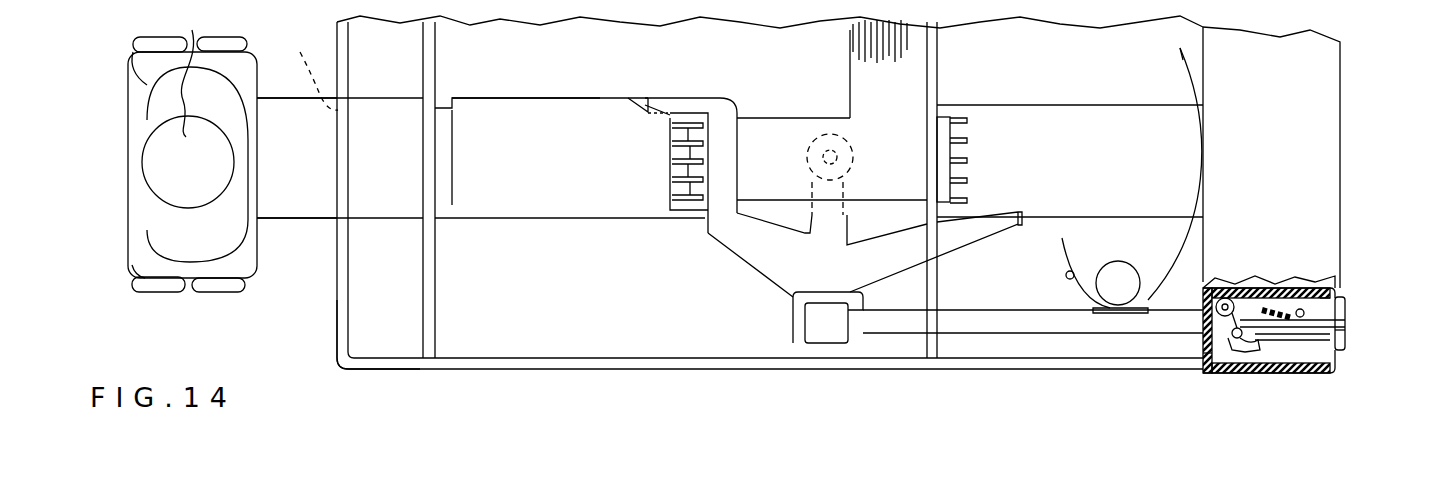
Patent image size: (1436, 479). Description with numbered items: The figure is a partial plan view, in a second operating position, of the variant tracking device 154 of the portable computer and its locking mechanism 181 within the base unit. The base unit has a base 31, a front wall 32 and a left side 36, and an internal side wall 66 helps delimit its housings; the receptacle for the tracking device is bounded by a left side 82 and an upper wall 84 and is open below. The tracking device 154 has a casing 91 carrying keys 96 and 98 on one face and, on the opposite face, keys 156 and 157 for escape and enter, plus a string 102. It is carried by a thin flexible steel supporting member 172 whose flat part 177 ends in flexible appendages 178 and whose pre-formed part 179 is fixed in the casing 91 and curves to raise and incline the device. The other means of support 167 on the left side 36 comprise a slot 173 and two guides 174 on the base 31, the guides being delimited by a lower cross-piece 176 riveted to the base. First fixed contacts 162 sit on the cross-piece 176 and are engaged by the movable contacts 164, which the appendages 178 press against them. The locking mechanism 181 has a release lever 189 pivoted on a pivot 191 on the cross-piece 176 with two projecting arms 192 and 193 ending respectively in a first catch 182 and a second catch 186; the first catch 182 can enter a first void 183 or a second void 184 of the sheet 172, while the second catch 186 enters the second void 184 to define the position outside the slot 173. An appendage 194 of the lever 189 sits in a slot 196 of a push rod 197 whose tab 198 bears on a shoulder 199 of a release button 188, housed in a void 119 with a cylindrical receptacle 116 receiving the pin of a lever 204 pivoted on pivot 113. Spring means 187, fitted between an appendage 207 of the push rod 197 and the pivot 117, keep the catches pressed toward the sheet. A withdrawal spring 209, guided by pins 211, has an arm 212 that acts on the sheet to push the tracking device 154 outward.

The base 31 is at (760, 345).
The front wall 32 is at (565, 362).
The left side 36 is at (337, 350).
The internal side wall 66 is at (430, 333).
The left side 82 is at (322, 5).
The upper wall 84 is at (1318, 112).
The casing 91 is at (137, 70).
The key 96 is at (226, 293).
The key 98 is at (158, 283).
The string 102 is at (191, 68).
The pivot 113 is at (1215, 300).
The cylindrical receptacle 116 is at (1200, 353).
The pivot 117 is at (1300, 312).
The void 119 is at (1348, 308).
The tracking device 154 is at (180, 169).
The key 156 is at (226, 40).
The key 157 is at (150, 47).
The first fixed contacts 162 is at (968, 120).
The movable contacts 164 is at (705, 192).
The other means of support 167 is at (325, 280).
The supporting member 172 is at (534, 230).
The slot 173 is at (305, 66).
The guides 174 is at (483, 218).
The lower cross-piece 176 is at (1053, 128).
The flat part 177 is at (530, 115).
The flexible appendages 178 is at (668, 205).
The pre-formed part 179 is at (298, 193).
The locking mechanism 181 is at (775, 300).
The first catch 182 is at (1020, 226).
The first void 183 is at (445, 98).
The second void 184 is at (640, 112).
The second catch 186 is at (640, 105).
The spring means 187 is at (1303, 297).
The release button 188 is at (1345, 330).
The release lever 189 is at (765, 262).
The pivot 191 is at (848, 140).
The projecting arm 192 is at (945, 240).
The projecting arm 193 is at (700, 100).
The appendage 194 is at (830, 335).
The slot 196 is at (833, 312).
The push rod 197 is at (1003, 325).
The tab 198 is at (1225, 345).
The shoulder 199 is at (1255, 345).
The lever 204 is at (1247, 300).
The appendage 207 is at (1285, 297).
The withdrawal spring 209 is at (1185, 236).
The pins 211 is at (1125, 278).
The arm 212 is at (1185, 70).